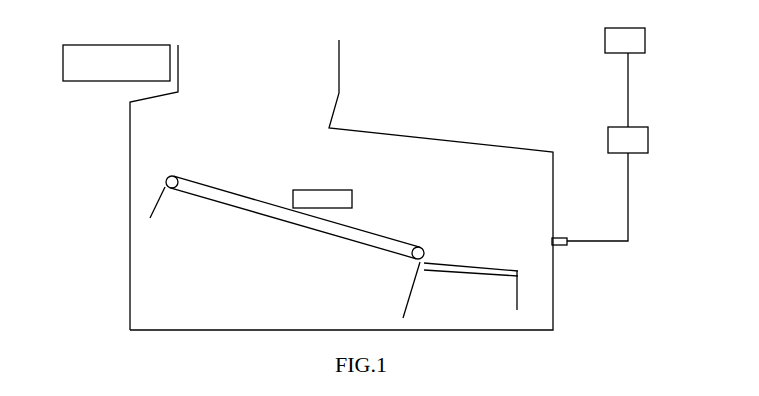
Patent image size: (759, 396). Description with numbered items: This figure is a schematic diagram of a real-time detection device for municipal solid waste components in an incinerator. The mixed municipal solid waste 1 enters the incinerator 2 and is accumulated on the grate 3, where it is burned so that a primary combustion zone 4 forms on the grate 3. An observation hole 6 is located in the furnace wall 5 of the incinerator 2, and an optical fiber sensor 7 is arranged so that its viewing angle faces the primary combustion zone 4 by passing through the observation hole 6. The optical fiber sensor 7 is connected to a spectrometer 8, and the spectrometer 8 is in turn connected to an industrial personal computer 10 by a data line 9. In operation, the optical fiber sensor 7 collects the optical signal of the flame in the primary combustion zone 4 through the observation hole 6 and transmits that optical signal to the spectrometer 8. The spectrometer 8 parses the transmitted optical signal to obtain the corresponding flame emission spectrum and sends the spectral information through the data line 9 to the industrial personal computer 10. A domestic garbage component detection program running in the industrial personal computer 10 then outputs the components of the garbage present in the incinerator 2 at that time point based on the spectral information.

The municipal solid waste 1 is at (123, 41).
The incinerator 2 is at (170, 114).
The grate 3 is at (166, 181).
The primary combustion zone 4 is at (298, 188).
The furnace wall 5 is at (553, 152).
The observation hole 6 is at (552, 238).
The optical fiber sensor 7 is at (607, 242).
The spectrometer 8 is at (648, 141).
The data line 9 is at (628, 95).
The industrial personal computer 10 is at (645, 43).